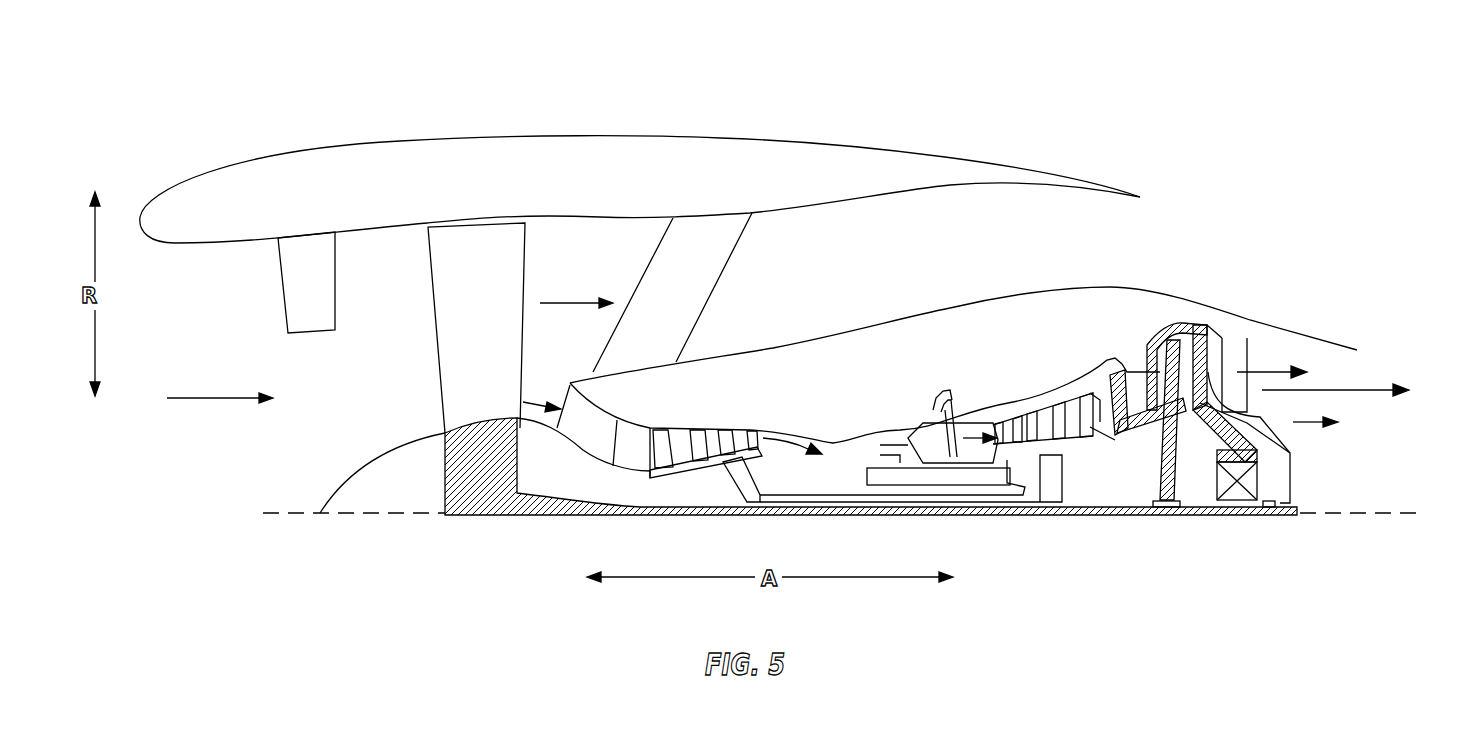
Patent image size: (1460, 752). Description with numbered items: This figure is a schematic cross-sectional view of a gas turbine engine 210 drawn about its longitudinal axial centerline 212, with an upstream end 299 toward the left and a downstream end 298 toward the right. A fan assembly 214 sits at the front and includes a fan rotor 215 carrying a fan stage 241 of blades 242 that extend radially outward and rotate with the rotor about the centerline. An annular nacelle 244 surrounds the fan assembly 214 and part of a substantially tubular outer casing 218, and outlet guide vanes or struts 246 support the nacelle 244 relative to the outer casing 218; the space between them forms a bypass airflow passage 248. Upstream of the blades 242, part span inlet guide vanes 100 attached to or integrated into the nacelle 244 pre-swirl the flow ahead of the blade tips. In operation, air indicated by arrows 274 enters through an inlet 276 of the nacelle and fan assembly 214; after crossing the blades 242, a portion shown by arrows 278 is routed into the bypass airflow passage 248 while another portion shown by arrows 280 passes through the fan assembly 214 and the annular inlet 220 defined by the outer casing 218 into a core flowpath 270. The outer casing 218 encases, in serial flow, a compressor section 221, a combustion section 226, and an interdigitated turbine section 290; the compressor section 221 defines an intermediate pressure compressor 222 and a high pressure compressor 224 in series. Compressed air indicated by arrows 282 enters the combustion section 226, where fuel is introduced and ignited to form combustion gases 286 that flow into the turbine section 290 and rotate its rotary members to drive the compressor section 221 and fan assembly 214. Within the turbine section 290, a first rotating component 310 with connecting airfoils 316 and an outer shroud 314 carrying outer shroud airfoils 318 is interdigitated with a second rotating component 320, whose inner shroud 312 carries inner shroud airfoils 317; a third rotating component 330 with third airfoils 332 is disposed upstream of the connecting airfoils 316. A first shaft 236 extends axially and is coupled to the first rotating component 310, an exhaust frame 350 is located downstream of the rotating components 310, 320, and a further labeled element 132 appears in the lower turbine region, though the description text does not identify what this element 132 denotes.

The engine 210 is at (1141, 115).
The nacelle 244 is at (360, 160).
The fan stage 241 is at (475, 208).
The part span inlet guide vanes 100 is at (305, 282).
The blades 242 is at (440, 280).
The outlet guide vanes or struts 246 is at (695, 283).
The bypass airflow passage 248 is at (827, 271).
The bypass air arrows 278 is at (564, 300).
The annular inlet 220 is at (570, 383).
The core air arrows 280 is at (523, 400).
The core flowpath 270 is at (635, 440).
The fan assembly 214 is at (418, 372).
The fan rotor 215 is at (457, 470).
The inlet air arrows 274 is at (232, 398).
The inlet 276 is at (242, 332).
The upstream end 299 is at (132, 486).
The first shaft 236 is at (550, 518).
The axial centerline 212 is at (1355, 512).
The compressor section 221 is at (767, 348).
The outer casing 218 is at (900, 337).
The intermediate pressure compressor 222 is at (657, 425).
The compressed air arrows 282 is at (790, 433).
The high pressure compressor 224 is at (837, 432).
The combustion section 226 is at (968, 400).
The combustion gases 286 is at (977, 433).
The third airfoils 332 is at (1047, 339).
The interdigitated turbine section 290 is at (1094, 318).
The turbine rotor 132 is at (1083, 455).
The inner shroud airfoils 317 is at (1127, 325).
The outer shroud airfoils 318 is at (1143, 320).
The connecting airfoils 316 is at (1200, 320).
The outer shroud 314 is at (1165, 312).
The third rotating component 330 is at (1062, 502).
The first rotating component 310 is at (1205, 358).
The exhaust frame 350 is at (1265, 358).
The inner shroud 312 is at (1293, 423).
The downstream end 298 is at (1457, 433).
The second rotating component 320 is at (1203, 510).